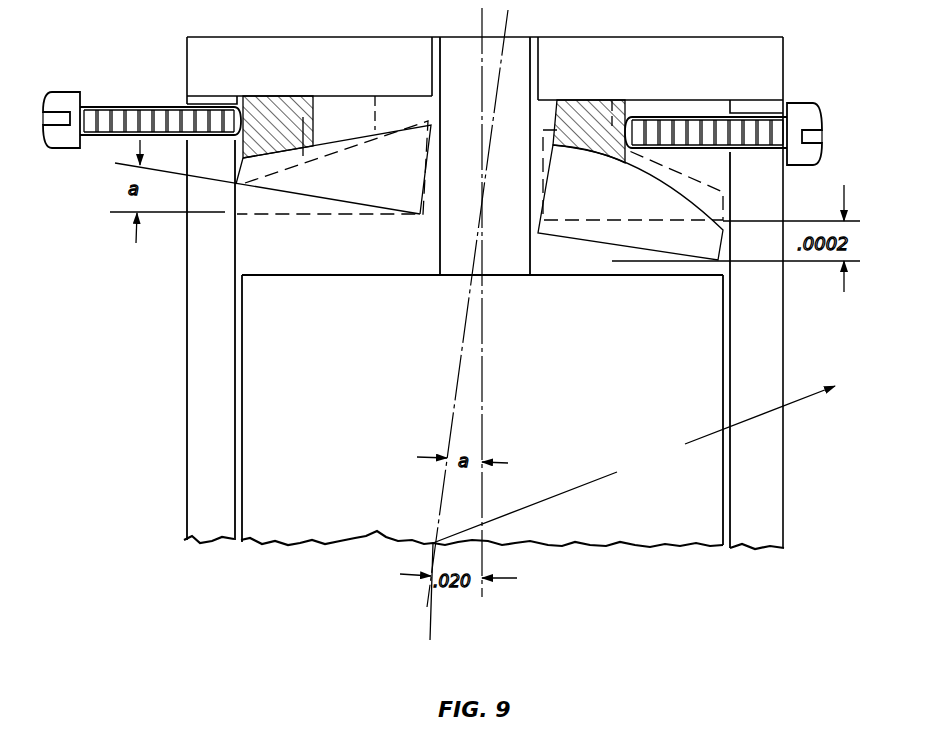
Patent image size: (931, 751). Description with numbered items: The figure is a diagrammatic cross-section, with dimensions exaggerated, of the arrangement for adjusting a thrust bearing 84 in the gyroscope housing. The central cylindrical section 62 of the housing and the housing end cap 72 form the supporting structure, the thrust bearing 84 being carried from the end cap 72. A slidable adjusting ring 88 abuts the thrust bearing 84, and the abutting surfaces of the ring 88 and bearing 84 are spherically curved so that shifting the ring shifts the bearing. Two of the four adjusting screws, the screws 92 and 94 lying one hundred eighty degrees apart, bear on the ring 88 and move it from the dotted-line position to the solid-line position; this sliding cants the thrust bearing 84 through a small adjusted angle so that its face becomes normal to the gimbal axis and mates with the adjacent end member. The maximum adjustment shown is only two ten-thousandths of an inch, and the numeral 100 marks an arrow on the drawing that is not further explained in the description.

The central cylindrical section 62 is at (766, 200).
The housing end cap 72 is at (773, 76).
The thrust bearing 84 is at (366, 188).
The adjusting ring 88 is at (285, 121).
The adjusting screw 92 is at (65, 93).
The adjusting screw 94 is at (803, 118).
The radius arrow 100 is at (634, 464).